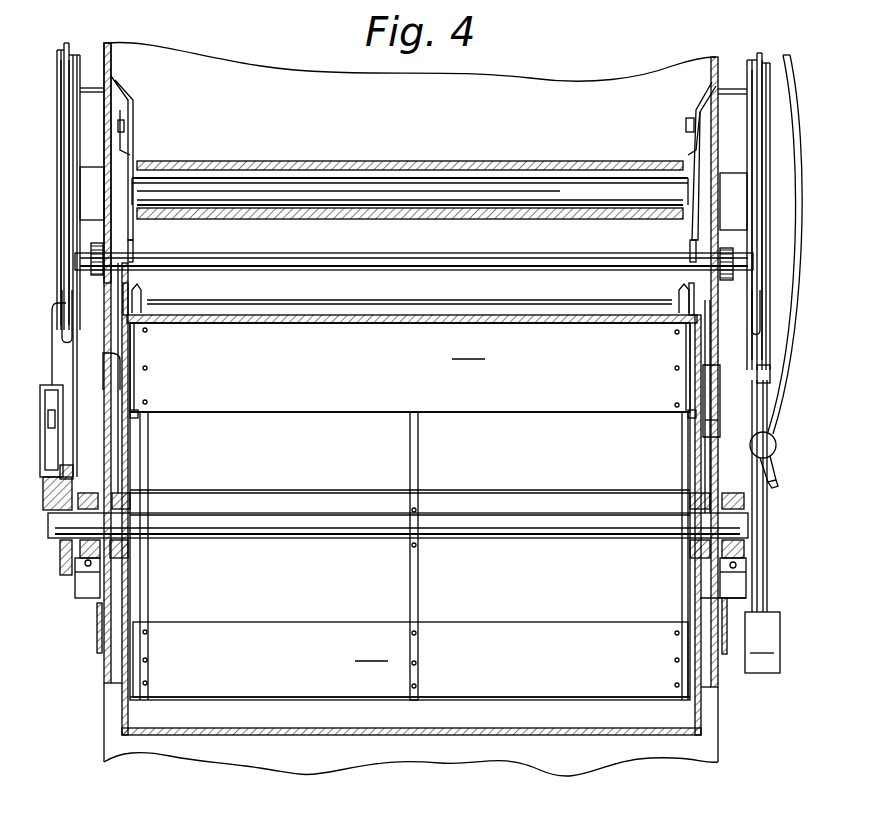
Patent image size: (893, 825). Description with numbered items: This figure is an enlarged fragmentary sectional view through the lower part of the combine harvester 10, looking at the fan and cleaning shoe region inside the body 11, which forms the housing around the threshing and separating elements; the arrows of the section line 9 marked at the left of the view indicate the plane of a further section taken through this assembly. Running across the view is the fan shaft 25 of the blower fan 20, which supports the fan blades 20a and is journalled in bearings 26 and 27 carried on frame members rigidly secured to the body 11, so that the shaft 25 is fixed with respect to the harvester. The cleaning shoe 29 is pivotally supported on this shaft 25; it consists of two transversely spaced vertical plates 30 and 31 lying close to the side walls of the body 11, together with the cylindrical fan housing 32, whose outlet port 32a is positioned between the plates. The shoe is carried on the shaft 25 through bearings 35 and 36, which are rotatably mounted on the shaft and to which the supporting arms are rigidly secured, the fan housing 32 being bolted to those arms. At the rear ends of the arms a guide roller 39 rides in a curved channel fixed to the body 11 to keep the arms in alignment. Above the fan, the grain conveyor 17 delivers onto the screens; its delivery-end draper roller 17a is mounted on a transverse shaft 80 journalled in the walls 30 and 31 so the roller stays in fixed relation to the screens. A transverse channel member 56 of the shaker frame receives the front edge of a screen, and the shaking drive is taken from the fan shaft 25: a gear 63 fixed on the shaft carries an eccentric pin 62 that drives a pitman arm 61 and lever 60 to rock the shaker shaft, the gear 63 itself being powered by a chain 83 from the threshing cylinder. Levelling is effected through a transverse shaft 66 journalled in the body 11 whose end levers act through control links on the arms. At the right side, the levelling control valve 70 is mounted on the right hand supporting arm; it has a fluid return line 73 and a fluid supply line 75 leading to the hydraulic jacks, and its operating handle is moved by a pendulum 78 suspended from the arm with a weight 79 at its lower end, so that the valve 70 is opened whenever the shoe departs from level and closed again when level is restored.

The section line 9 is at (113, 287).
The combine harvester 10 is at (103, 731).
The body 11 is at (112, 66).
The grain conveyor 17 is at (420, 168).
The draper roller 17a is at (335, 178).
The blower fan 20 is at (312, 415).
The fan blades 20a is at (410, 510).
The fan shaft 25 is at (340, 520).
The bearing 26 is at (88, 492).
The bearing 27 is at (730, 495).
The cleaning shoe 29 is at (690, 132).
The vertical plate 30 is at (128, 246).
The vertical plate 31 is at (695, 248).
The fan housing 32 is at (345, 325).
The outlet port 32a is at (532, 492).
The bearing 35 is at (125, 505).
The bearing 36 is at (690, 500).
The guide roller 39 is at (120, 448).
The transverse channel member 56 is at (392, 310).
The lever 60 is at (52, 306).
The pitman arm 61 is at (54, 446).
The eccentric pin 62 is at (55, 500).
The gear 63 is at (62, 560).
The transverse shaft 66 is at (483, 264).
The levelling control valve 70 is at (774, 453).
The fluid return line 73 is at (777, 478).
The fluid supply line 75 is at (772, 418).
The pendulum 78 is at (762, 582).
The weight 79 is at (762, 642).
The transverse shaft 80 is at (135, 185).
The chain 83 is at (70, 466).